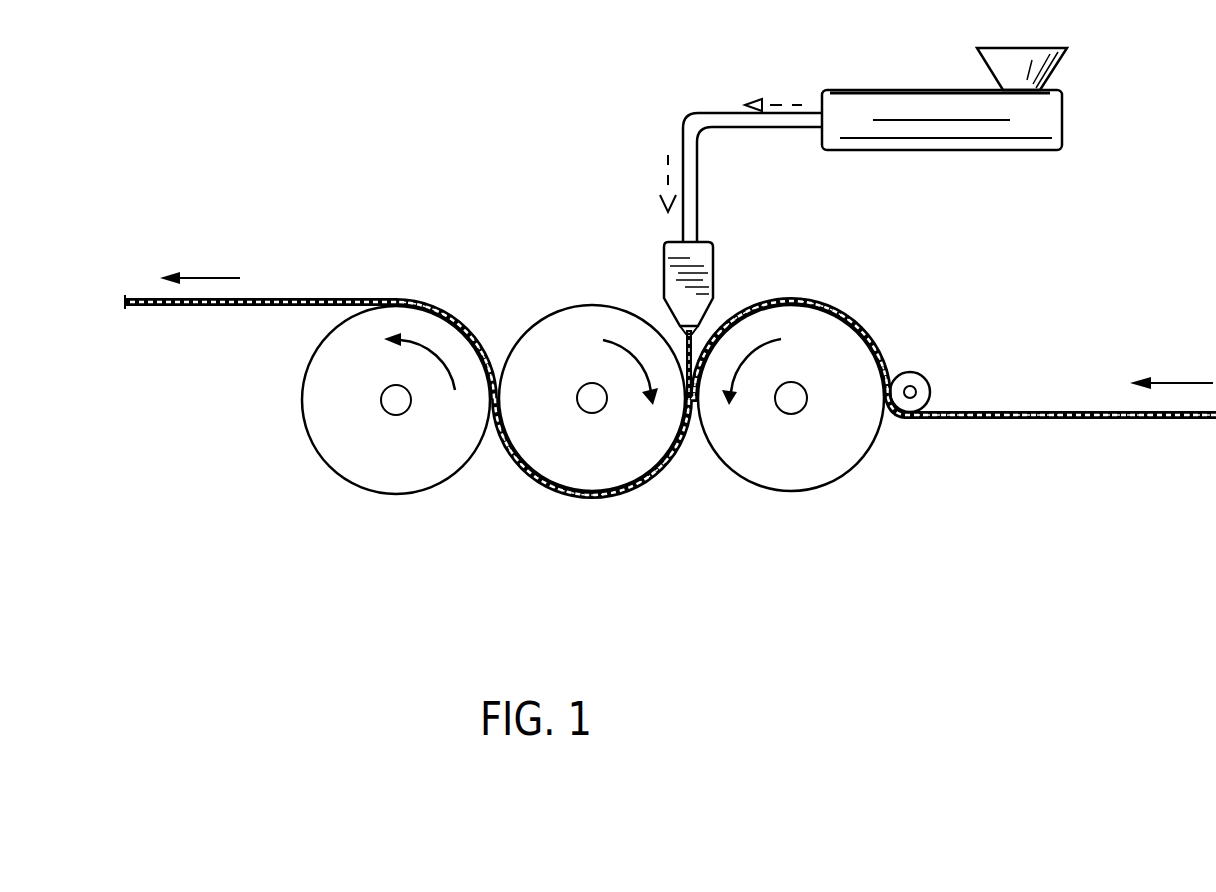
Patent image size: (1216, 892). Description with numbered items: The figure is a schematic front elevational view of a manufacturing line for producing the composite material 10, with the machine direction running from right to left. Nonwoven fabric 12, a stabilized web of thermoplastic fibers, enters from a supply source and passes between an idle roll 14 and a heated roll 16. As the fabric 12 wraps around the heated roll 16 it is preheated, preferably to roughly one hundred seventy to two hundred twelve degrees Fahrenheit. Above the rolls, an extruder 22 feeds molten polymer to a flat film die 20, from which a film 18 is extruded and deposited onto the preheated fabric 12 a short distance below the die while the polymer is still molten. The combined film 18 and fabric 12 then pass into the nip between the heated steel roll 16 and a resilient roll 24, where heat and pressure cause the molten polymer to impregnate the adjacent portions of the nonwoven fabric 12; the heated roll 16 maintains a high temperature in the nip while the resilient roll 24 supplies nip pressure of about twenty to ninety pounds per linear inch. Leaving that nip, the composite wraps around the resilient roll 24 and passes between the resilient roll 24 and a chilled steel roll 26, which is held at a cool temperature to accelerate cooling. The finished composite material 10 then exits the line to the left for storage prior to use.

The composite material 10 is at (149, 290).
The nonwoven fabric 12 is at (1104, 421).
The idle roll 14 is at (933, 384).
The heated roll 16 is at (797, 495).
The film 18 is at (252, 347).
The flat film die 20 is at (714, 258).
The extruder 22 is at (1065, 117).
The resilient roll 24 is at (553, 318).
The chilled steel roll 26 is at (378, 494).